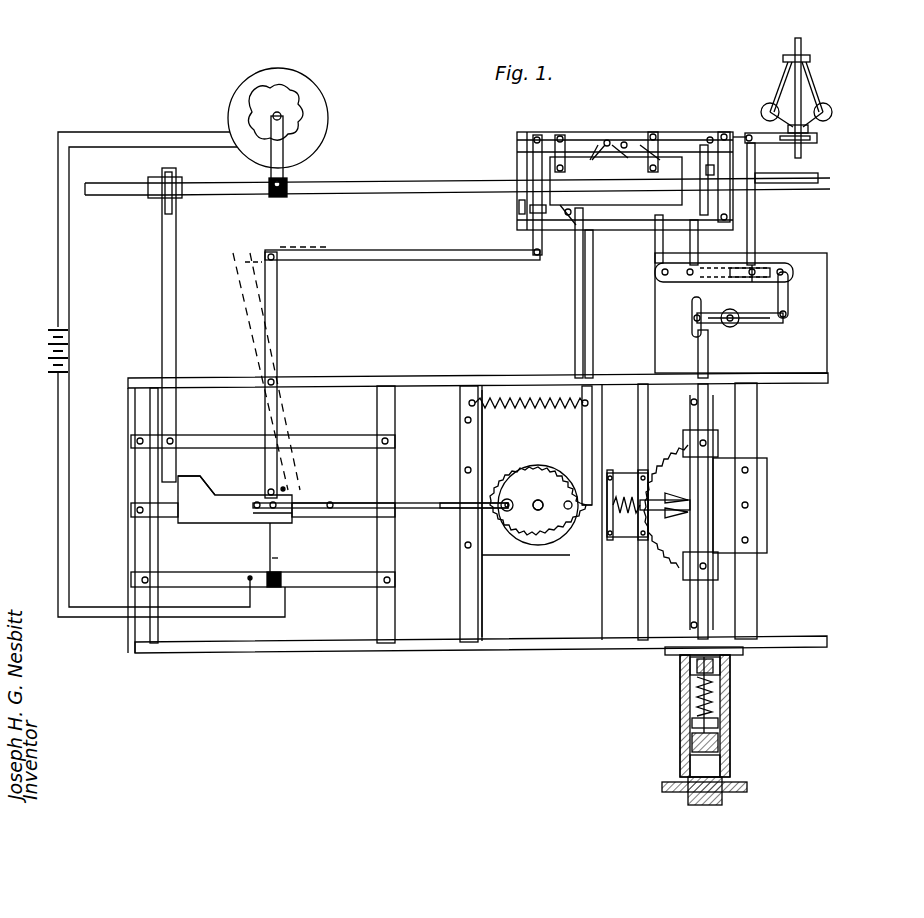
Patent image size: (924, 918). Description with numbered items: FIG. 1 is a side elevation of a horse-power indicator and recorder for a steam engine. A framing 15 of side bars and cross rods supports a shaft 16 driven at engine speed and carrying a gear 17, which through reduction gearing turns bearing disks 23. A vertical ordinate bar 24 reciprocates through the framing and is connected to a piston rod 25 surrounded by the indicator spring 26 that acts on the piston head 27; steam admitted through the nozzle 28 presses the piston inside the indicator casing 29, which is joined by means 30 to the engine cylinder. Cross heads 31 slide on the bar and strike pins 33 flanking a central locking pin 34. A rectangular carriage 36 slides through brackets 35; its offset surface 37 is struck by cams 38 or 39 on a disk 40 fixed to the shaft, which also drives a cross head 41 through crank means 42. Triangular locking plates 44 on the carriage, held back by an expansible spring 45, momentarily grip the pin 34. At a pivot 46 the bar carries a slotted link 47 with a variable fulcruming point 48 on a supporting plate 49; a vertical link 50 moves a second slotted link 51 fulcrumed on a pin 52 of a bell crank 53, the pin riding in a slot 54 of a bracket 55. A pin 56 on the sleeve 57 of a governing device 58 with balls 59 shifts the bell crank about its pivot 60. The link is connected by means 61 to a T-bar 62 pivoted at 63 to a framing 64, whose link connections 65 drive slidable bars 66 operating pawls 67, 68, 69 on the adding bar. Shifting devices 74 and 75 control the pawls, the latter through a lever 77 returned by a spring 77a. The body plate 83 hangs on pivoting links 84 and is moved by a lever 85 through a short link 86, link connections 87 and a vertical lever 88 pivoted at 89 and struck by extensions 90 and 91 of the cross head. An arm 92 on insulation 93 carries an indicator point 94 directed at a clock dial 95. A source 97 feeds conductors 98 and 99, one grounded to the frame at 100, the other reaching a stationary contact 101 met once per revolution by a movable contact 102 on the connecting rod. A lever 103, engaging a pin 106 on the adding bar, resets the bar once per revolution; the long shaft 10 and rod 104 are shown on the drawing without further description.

The shaft 10 is at (470, 181).
The framing 15 is at (460, 378).
The shaft 16 is at (538, 512).
The gear 17 is at (530, 465).
The bearing disks 23 is at (715, 480).
The ordinate bar 24 is at (708, 360).
The piston rod 25 is at (722, 668).
The indicator spring 26 is at (712, 695).
The piston head 27 is at (720, 742).
The nozzle 28 is at (726, 775).
The indicator casing 29 is at (680, 718).
The connecting means 30 is at (668, 782).
The cross heads 31 is at (718, 443).
The pins 33 is at (698, 440).
The locking pin 34 is at (768, 490).
The brackets 35 is at (645, 540).
The rectangular carriage 36 is at (610, 480).
The offset surface 37 is at (526, 492).
The cam 38 is at (565, 510).
The cam 39 is at (485, 503).
The disk 40 is at (500, 515).
The cross head 41 is at (227, 512).
The crank means 42 is at (352, 502).
The triangular locking plates 44 is at (665, 506).
The expansible spring 45 is at (590, 510).
The pivot 46 is at (690, 318).
The slotted link 47 is at (740, 305).
The variable fulcruming point 48 is at (740, 325).
The supporting plate 49 is at (810, 312).
The vertical link 50 is at (790, 300).
The slotted link 51 is at (760, 268).
The fulcruming pin 52 is at (760, 262).
The bell crank 53 is at (757, 205).
The slot 54 is at (700, 280).
The bracket 55 is at (665, 282).
The pin 56 is at (815, 140).
The sleeve 57 is at (812, 128).
The governing device 58 is at (812, 58).
The balls 59 is at (764, 105).
The pivot 60 is at (735, 135).
The connecting means 61 is at (668, 240).
The T-bar 62 is at (720, 162).
The pivot 63 is at (702, 161).
The framing 64 is at (605, 140).
The link connections 65 is at (710, 145).
The slidable bars 66 is at (580, 145).
The pawl 67 is at (620, 145).
The pawl 68 is at (650, 145).
The pawl 69 is at (575, 265).
The shifting device 74 is at (616, 181).
The shifting device 75 is at (596, 140).
The lever 77 is at (585, 350).
The spring 77a is at (492, 395).
The body plate 83 is at (568, 185).
The pivoting links 84 is at (562, 135).
The lever 85 is at (517, 208).
The short link 86 is at (551, 230).
The link connections 87 is at (398, 250).
The vertical lever 88 is at (277, 322).
The pivot 89 is at (282, 385).
The extension 90 is at (290, 485).
The extension 91 is at (198, 490).
The arm 92 is at (300, 138).
The insulation 93 is at (278, 196).
The indicator point 94 is at (281, 113).
The dial 95 is at (240, 80).
The source of difference of potential 97 is at (46, 352).
The conductor 98 is at (155, 374).
The conductor 99 is at (72, 420).
The frame connection 100 is at (270, 588).
The stationary contact 101 is at (278, 558).
The movable contact 102 is at (275, 538).
The lever 103 is at (162, 280).
The rod 104 is at (150, 181).
The pin 106 is at (178, 180).